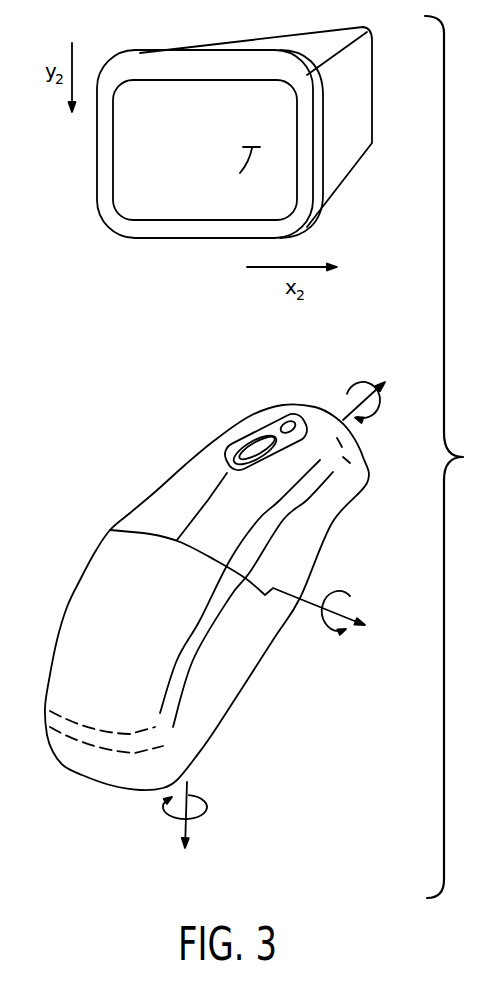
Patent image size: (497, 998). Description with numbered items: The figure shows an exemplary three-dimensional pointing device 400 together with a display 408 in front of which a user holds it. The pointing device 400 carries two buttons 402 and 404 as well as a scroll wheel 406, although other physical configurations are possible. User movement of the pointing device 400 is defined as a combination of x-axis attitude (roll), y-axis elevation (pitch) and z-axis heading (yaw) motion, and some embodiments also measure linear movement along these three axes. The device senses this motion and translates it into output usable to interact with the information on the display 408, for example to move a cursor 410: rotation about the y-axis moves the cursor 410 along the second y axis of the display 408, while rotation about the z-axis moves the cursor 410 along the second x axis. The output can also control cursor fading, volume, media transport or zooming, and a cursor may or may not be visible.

The 3D pointing device 400 is at (227, 614).
The button 402 is at (163, 497).
The button 404 is at (325, 500).
The scroll wheel 406 is at (263, 450).
The display 408 is at (312, 123).
The cursor 410 is at (244, 178).